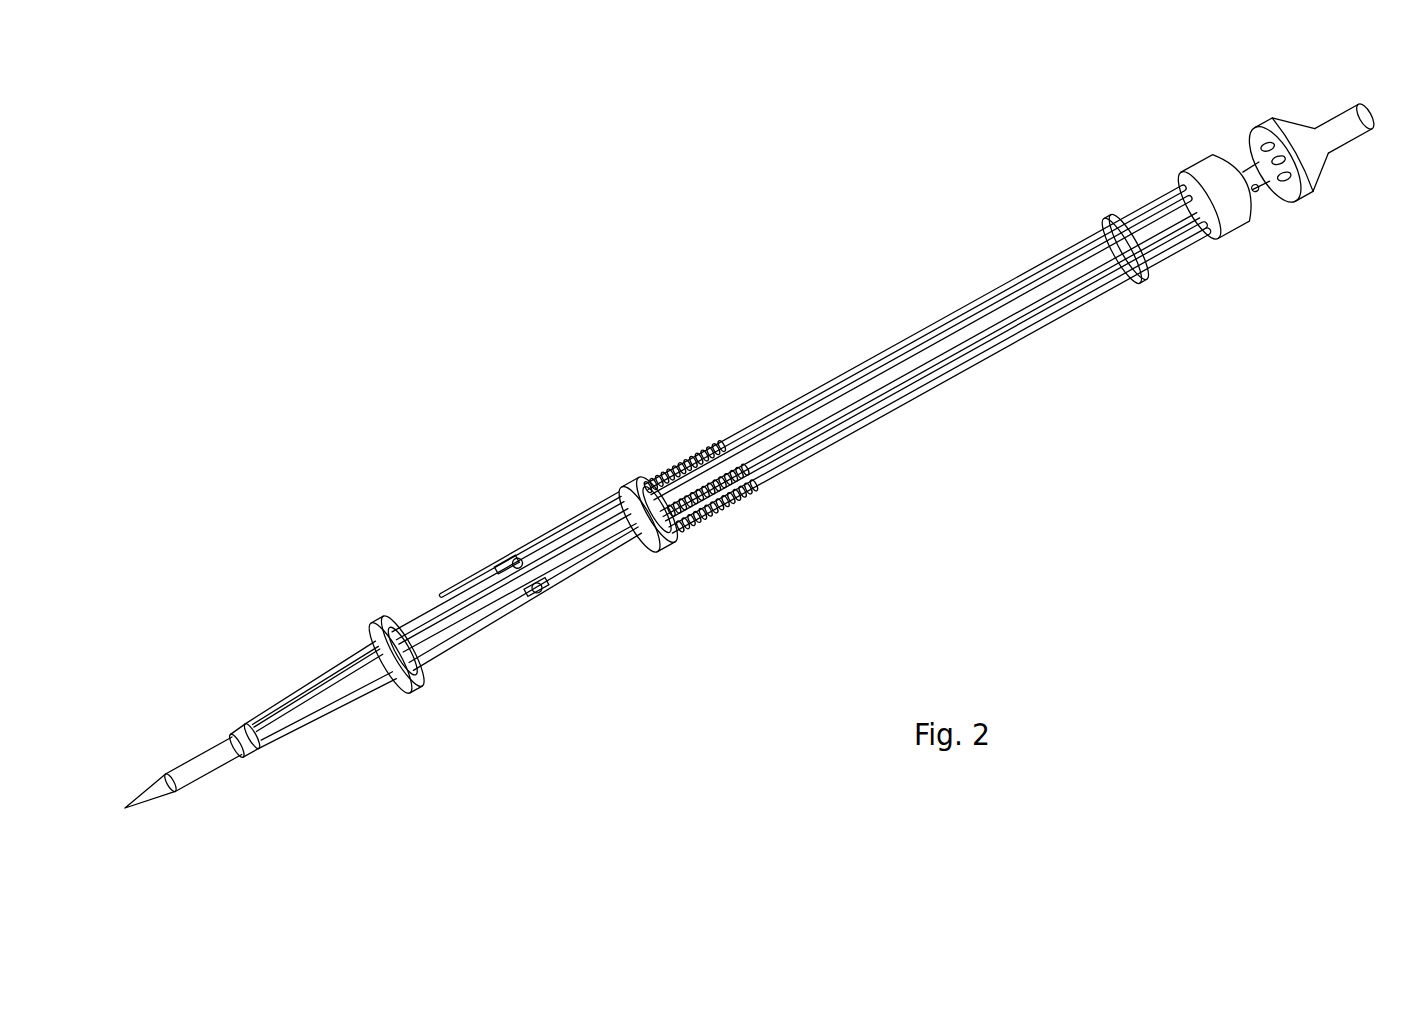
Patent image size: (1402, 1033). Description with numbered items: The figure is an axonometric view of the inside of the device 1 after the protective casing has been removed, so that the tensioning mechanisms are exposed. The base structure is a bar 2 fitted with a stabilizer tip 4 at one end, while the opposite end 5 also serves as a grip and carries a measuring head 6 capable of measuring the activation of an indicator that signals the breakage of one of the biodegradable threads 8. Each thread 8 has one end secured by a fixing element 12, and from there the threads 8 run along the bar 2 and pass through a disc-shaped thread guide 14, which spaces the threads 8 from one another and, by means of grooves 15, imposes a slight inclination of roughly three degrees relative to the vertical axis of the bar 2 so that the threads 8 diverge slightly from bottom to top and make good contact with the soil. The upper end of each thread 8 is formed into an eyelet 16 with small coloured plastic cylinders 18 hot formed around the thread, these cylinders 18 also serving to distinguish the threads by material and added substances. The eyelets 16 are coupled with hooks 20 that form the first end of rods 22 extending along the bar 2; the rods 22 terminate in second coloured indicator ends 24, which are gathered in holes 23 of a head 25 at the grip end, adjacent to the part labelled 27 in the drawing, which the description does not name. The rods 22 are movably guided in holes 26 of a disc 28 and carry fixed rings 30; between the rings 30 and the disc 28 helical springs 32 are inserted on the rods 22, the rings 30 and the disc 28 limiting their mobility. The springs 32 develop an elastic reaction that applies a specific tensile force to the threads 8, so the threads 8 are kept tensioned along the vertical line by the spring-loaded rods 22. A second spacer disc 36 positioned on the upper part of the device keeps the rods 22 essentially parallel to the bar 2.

The device 1 is at (670, 363).
The bar 2 is at (325, 706).
The stabilizer tip 4 is at (197, 760).
The opposite end 5 is at (1350, 135).
The measuring head 6 is at (1308, 183).
The biodegradable threads 8 is at (370, 678).
The fixing elements 12 is at (247, 730).
The thread guide 14 is at (422, 672).
The groove 15 is at (407, 625).
The eyelet 16 is at (487, 575).
The small coloured plastic cylinders 18 is at (490, 633).
The hooks 20 is at (556, 603).
The rods 22 is at (900, 380).
The holes 23 is at (1259, 195).
The coloured indicator ends 24 is at (1193, 243).
The head 25 is at (1208, 168).
The holes 26 is at (660, 542).
The disk 27 is at (1258, 153).
The disc 28 is at (636, 507).
The fixed rings 30 is at (728, 450).
The helical springs 32 is at (700, 527).
The second spacer disc 36 is at (1122, 225).